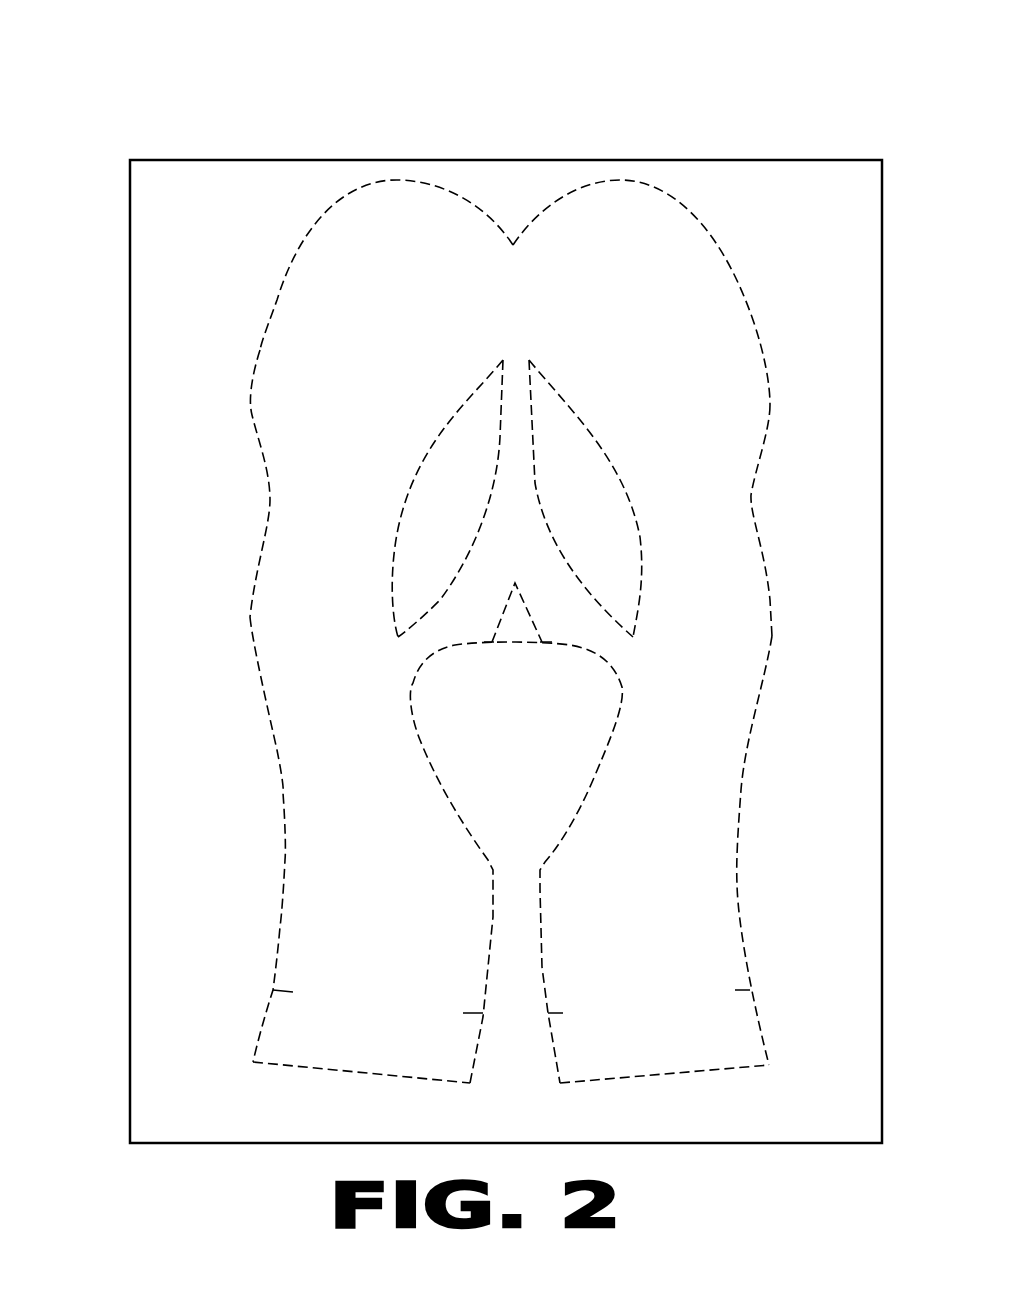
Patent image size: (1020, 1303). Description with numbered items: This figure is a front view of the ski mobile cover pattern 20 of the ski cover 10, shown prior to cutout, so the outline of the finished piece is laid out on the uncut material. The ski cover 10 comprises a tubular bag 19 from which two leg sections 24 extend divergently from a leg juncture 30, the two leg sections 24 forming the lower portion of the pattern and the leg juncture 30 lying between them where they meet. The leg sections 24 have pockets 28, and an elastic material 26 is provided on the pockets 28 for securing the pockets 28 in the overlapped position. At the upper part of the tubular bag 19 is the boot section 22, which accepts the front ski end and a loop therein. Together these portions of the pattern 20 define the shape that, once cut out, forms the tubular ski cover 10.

The ski cover 10 is at (683, 91).
The tubular bag 19 is at (283, 410).
The ski mobile cover pattern 20 is at (300, 245).
The boot section 22 is at (620, 233).
The leg sections 24 is at (353, 972).
The elastic material 26 is at (283, 793).
The pockets 28 is at (313, 1033).
The leg juncture 30 is at (515, 583).